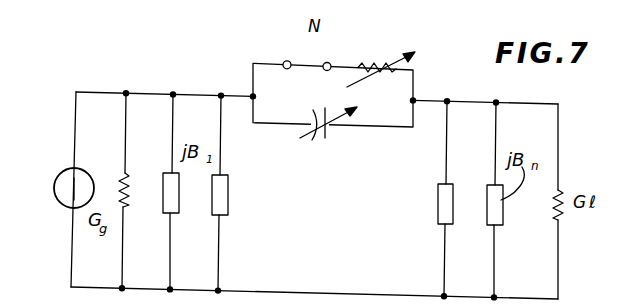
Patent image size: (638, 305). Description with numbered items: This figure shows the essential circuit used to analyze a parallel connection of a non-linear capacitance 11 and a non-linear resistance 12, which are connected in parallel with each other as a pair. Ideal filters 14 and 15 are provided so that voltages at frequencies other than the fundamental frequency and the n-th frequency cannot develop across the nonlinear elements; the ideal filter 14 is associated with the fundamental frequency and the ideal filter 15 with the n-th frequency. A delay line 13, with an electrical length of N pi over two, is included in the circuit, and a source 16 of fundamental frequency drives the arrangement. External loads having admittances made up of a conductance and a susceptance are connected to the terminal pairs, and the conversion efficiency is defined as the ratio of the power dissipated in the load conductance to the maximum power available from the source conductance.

The non-linear capacitance 11 is at (324, 139).
The non-linear resistance 12 is at (373, 64).
The delay line 13 is at (295, 60).
The ideal filter F1 14 is at (223, 214).
The ideal filter Fn 15 is at (437, 219).
The source of fundamental frequency 16 is at (60, 173).